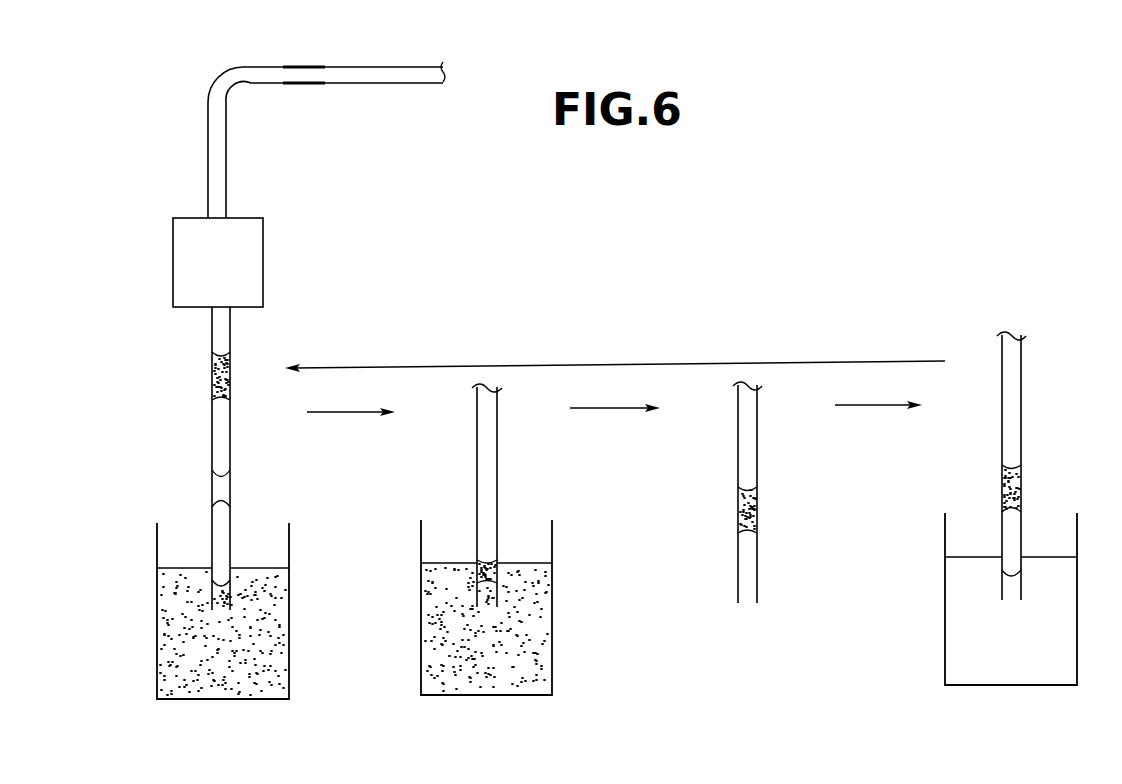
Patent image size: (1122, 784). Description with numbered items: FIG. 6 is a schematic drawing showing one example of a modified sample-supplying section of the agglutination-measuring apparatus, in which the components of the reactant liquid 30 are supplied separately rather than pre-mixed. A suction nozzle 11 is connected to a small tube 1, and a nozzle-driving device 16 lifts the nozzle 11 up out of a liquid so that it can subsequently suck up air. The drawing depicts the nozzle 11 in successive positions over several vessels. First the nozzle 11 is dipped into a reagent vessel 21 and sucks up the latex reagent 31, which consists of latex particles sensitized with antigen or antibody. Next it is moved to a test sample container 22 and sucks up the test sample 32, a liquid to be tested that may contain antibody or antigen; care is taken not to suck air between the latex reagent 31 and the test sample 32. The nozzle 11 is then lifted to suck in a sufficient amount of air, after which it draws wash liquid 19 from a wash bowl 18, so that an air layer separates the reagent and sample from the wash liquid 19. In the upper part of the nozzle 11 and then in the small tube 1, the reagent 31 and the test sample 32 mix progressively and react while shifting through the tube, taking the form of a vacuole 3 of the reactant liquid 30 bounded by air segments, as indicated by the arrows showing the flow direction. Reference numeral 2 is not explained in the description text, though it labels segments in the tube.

The small tube 1 is at (400, 67).
The sample liquid segment 2 is at (227, 438).
The vacuole 3 is at (196, 370).
The suction nozzle 11 is at (212, 425).
The nozzle-driving device 16 is at (262, 230).
The wash bowl 18 is at (945, 570).
The wash liquid 19 is at (218, 493).
The reagent vessel 21 is at (157, 577).
The test sample container 22 is at (421, 572).
The reactant liquid 30 is at (223, 377).
The latex reagent 31 is at (183, 635).
The test sample 32 is at (490, 598).